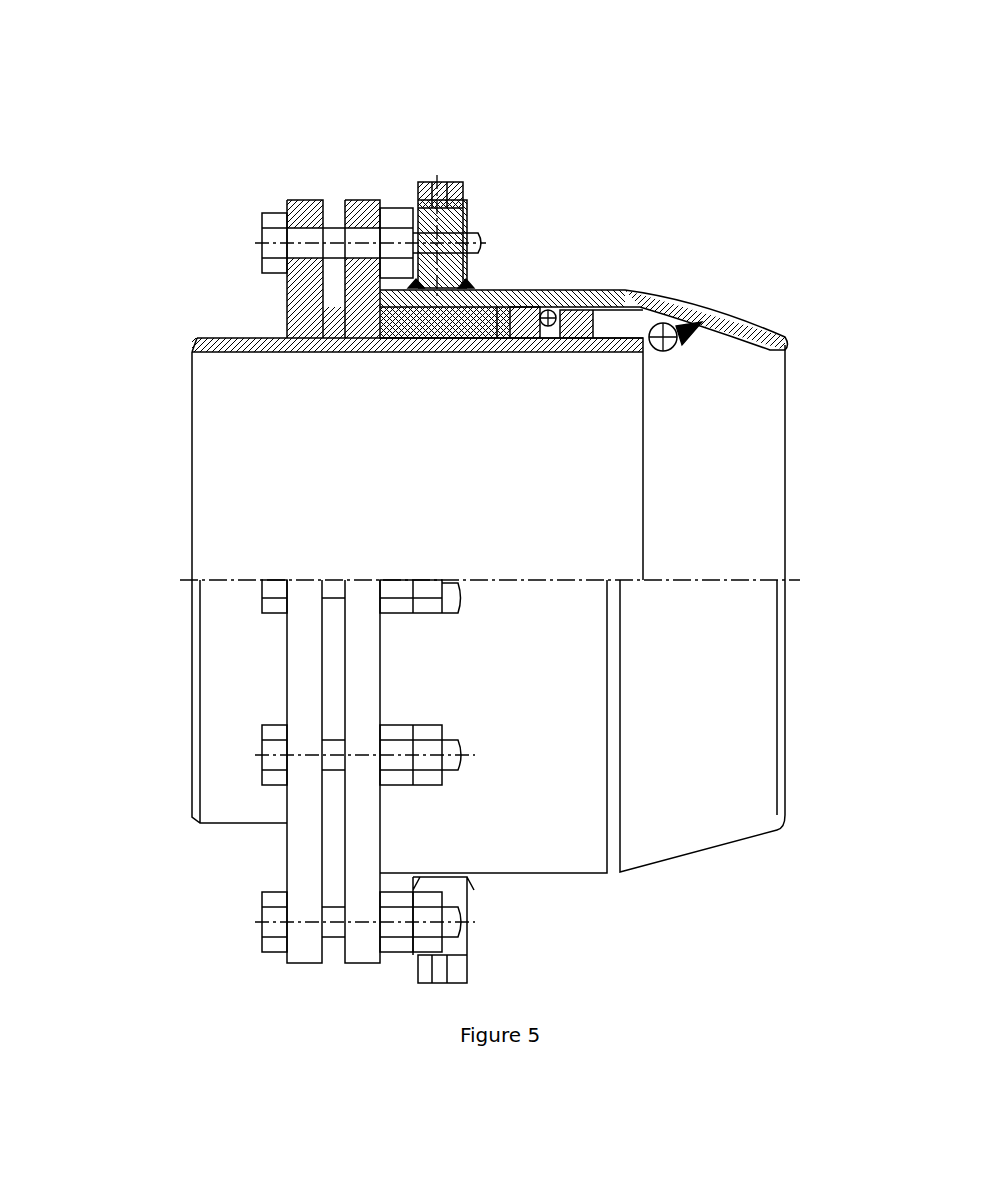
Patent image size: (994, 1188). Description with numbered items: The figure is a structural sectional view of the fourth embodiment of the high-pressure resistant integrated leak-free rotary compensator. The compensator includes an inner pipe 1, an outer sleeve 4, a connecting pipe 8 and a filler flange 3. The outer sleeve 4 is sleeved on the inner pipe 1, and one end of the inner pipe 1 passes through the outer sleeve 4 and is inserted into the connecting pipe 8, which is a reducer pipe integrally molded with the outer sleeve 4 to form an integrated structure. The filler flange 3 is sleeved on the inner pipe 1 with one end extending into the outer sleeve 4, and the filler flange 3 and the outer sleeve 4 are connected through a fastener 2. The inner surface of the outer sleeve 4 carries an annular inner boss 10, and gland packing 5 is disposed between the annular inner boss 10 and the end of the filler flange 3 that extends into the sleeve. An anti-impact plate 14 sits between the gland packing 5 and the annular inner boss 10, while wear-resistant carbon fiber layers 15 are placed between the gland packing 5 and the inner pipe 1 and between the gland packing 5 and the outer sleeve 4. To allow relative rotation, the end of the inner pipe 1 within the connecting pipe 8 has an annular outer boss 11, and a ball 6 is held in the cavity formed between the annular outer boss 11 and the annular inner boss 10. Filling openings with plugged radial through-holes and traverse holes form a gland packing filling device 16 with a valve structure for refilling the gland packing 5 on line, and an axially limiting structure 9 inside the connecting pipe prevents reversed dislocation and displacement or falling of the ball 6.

The inner pipe 1 is at (233, 343).
The fastener 2 is at (262, 240).
The filler flange 3 is at (313, 213).
The outer sleeve 4 is at (360, 203).
The gland packing 5 is at (437, 180).
The ball 6 is at (551, 310).
The connecting pipe 8 is at (637, 303).
The axially limiting structure 9 is at (683, 327).
The annular inner boss 10 is at (511, 315).
The annular outer boss 11 is at (580, 320).
The anti-impact plate 14 is at (494, 315).
The wear-resistant carbon fiber layer 15 is at (408, 315).
The gland packing filling device 16 is at (440, 315).